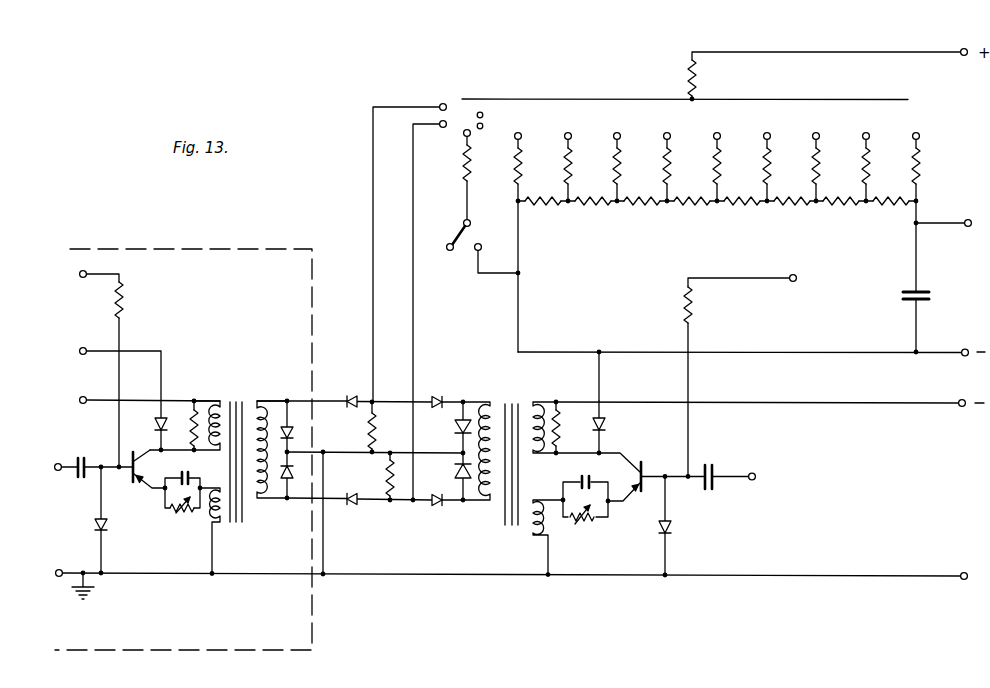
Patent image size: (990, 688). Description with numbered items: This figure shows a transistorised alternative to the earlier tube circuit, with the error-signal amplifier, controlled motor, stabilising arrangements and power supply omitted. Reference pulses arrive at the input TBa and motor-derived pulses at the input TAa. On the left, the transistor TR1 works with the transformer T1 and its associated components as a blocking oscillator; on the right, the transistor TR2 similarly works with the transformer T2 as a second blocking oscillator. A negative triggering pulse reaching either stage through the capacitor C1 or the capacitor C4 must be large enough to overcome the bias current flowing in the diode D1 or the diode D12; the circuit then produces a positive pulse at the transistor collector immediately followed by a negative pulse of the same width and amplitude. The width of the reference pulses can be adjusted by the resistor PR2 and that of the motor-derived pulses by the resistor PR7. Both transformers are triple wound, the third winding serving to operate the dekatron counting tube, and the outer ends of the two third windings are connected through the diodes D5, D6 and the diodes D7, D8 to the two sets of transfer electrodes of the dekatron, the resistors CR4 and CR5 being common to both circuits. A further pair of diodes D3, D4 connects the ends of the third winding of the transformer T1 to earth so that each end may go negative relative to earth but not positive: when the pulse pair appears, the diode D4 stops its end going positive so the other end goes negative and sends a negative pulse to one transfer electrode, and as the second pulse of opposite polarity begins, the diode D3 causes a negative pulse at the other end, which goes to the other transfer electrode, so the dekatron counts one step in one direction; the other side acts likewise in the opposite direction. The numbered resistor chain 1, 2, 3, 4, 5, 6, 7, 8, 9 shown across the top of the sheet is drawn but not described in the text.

The tap resistor 1 is at (540, 160).
The tap resistor 2 is at (590, 160).
The tap resistor 3 is at (639, 160).
The tap resistor 4 is at (689, 160).
The tap resistor 5 is at (739, 160).
The tap resistor 6 is at (789, 160).
The tap resistor 7 is at (838, 160).
The tap resistor 8 is at (888, 160).
The tap resistor 9 is at (916, 159).
The reference pulse input TBa is at (56, 464).
The capacitor C1 is at (81, 456).
The diode D1 is at (104, 527).
The transistor TR1 is at (131, 486).
The resistor PR2 is at (181, 514).
The transformer T1 is at (236, 404).
The diode D3 is at (287, 416).
The diode D4 is at (290, 484).
The diode D5 is at (349, 396).
The diode D6 is at (351, 506).
The diode D7 is at (437, 396).
The diode D8 is at (438, 507).
The resistor CR4 is at (353, 427).
The resistor CR5 is at (369, 477).
The transformer T2 is at (511, 404).
The transistor TR2 is at (645, 468).
The resistor PR7 is at (598, 523).
The capacitor C4 is at (708, 464).
The motor-derived pulse input TAa is at (756, 476).
The diode D12 is at (668, 530).